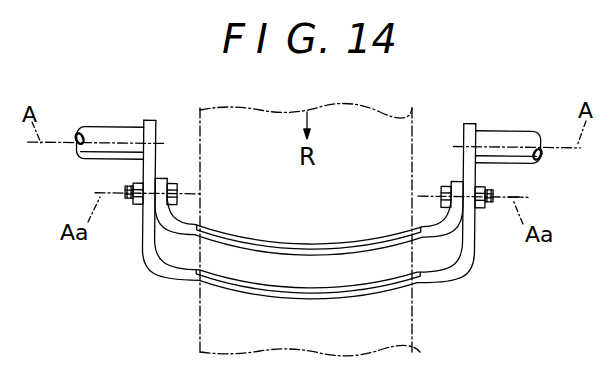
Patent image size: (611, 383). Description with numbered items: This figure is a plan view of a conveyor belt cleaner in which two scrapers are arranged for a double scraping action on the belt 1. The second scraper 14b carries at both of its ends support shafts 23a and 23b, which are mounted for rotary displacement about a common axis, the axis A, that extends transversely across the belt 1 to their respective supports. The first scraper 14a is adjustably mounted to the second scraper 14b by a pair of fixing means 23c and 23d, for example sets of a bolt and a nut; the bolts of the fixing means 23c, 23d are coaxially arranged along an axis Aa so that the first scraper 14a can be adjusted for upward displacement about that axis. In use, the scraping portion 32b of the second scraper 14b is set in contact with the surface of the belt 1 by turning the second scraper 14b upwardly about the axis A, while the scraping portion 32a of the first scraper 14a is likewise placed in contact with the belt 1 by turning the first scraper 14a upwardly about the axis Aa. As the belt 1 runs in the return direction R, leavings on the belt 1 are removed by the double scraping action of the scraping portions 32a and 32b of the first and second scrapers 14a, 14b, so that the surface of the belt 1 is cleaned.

The belt 1 is at (350, 99).
The first scraper 14a is at (350, 231).
The second scraper 14b is at (350, 307).
The scraping portion 32a is at (283, 240).
The scraping portion 32b is at (277, 297).
The support shaft 23a is at (123, 133).
The support shaft 23b is at (493, 132).
The fixing means 23c is at (131, 216).
The fixing means 23d is at (486, 218).